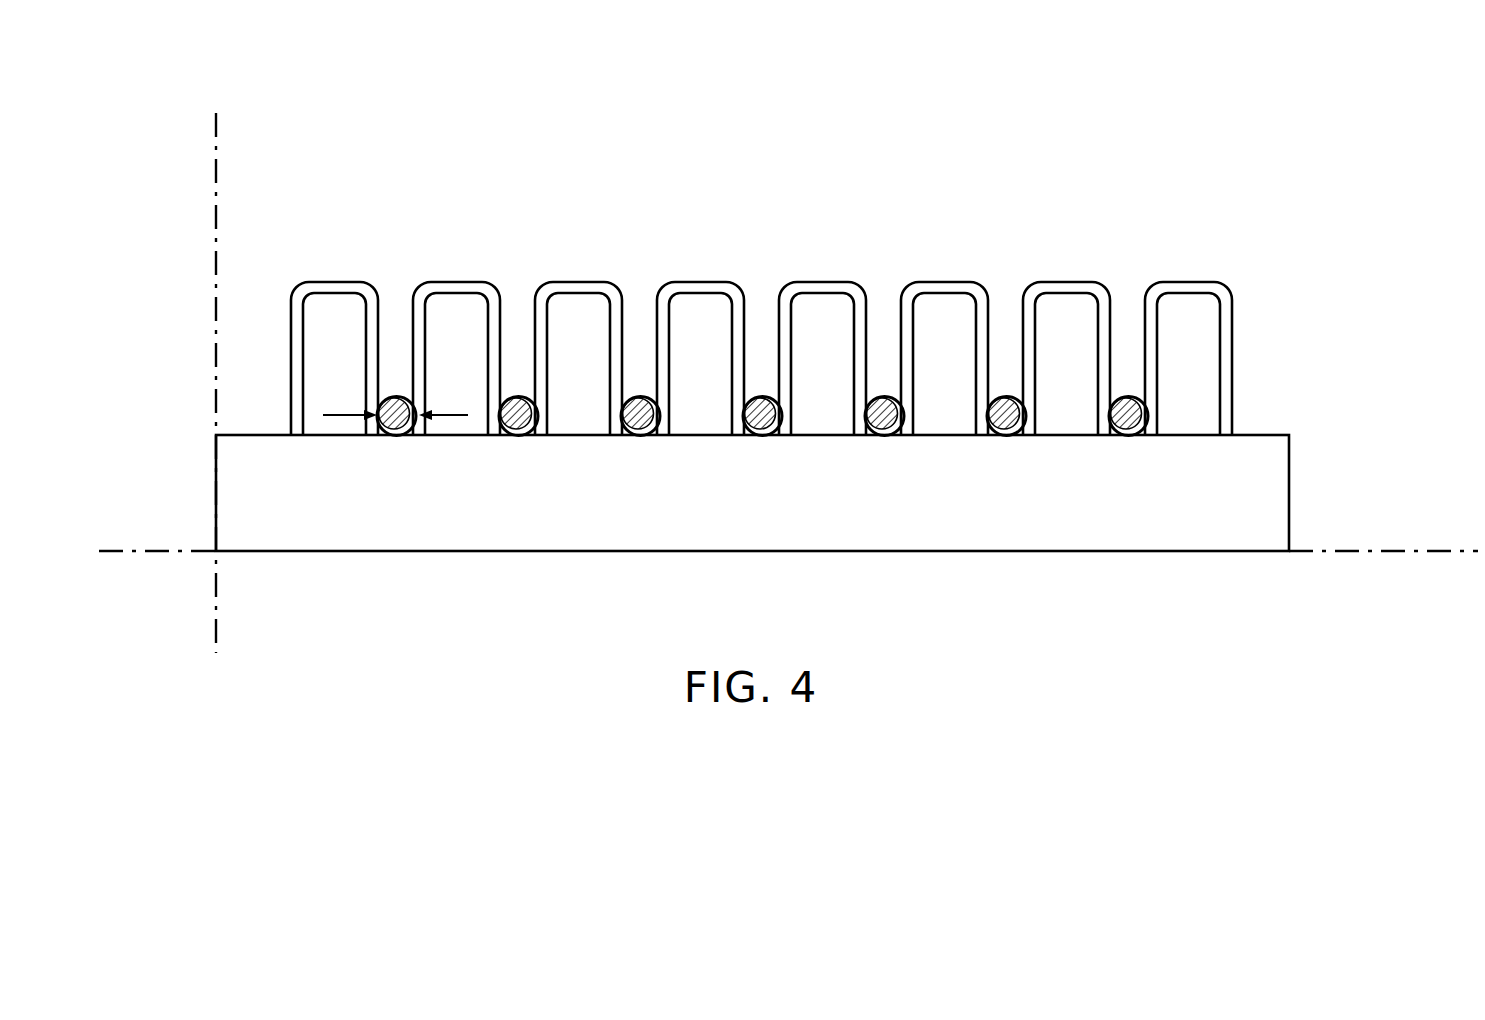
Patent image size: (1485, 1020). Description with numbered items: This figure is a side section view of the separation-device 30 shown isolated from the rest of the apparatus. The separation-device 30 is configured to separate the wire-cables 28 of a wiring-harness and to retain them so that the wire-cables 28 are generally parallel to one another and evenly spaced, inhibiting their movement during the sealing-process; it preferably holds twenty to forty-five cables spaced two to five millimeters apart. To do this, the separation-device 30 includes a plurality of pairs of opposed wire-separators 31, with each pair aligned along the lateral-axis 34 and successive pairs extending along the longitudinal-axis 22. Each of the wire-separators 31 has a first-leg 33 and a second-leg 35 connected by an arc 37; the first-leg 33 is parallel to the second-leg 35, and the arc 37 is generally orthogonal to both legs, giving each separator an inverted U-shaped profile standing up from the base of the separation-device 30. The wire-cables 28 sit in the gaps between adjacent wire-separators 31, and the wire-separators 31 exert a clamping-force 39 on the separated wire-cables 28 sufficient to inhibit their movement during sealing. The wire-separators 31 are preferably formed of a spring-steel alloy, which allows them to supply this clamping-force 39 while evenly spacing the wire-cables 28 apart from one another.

The longitudinal-axis 22 is at (1357, 553).
The wire-cables 28 is at (1118, 436).
The separation-device 30 is at (567, 551).
The wire-separators 31 is at (463, 272).
The first-leg 33 is at (1234, 352).
The lateral-axis 34 is at (216, 165).
The second-leg 35 is at (1143, 352).
The arc 37 is at (1188, 282).
The clamping-force 39 is at (343, 415).